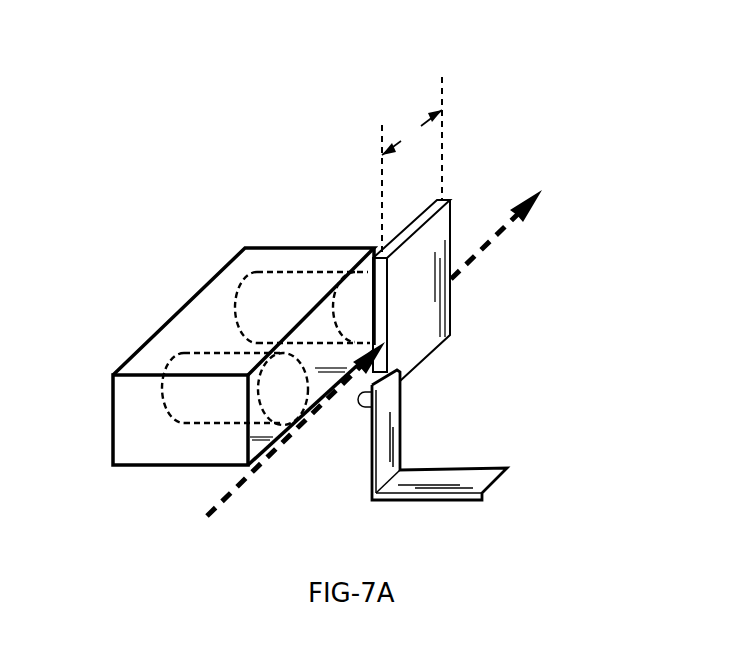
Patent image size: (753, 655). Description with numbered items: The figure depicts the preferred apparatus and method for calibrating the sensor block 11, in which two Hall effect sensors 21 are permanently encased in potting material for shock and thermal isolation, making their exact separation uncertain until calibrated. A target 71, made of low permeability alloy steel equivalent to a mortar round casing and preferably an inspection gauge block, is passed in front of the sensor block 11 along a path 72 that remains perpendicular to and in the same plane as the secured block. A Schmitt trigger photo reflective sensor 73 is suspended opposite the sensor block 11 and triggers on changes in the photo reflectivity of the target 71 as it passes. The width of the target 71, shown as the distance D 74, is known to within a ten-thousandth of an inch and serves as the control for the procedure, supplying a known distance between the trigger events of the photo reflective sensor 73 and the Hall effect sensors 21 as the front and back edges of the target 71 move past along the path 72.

The sensor block 11 is at (228, 260).
The Hall effect sensors 21 is at (255, 310).
The target 71 is at (427, 338).
The path 72 is at (387, 341).
The Schmitt trigger photo reflective sensor 73 is at (363, 413).
The target width D 74 is at (402, 122).